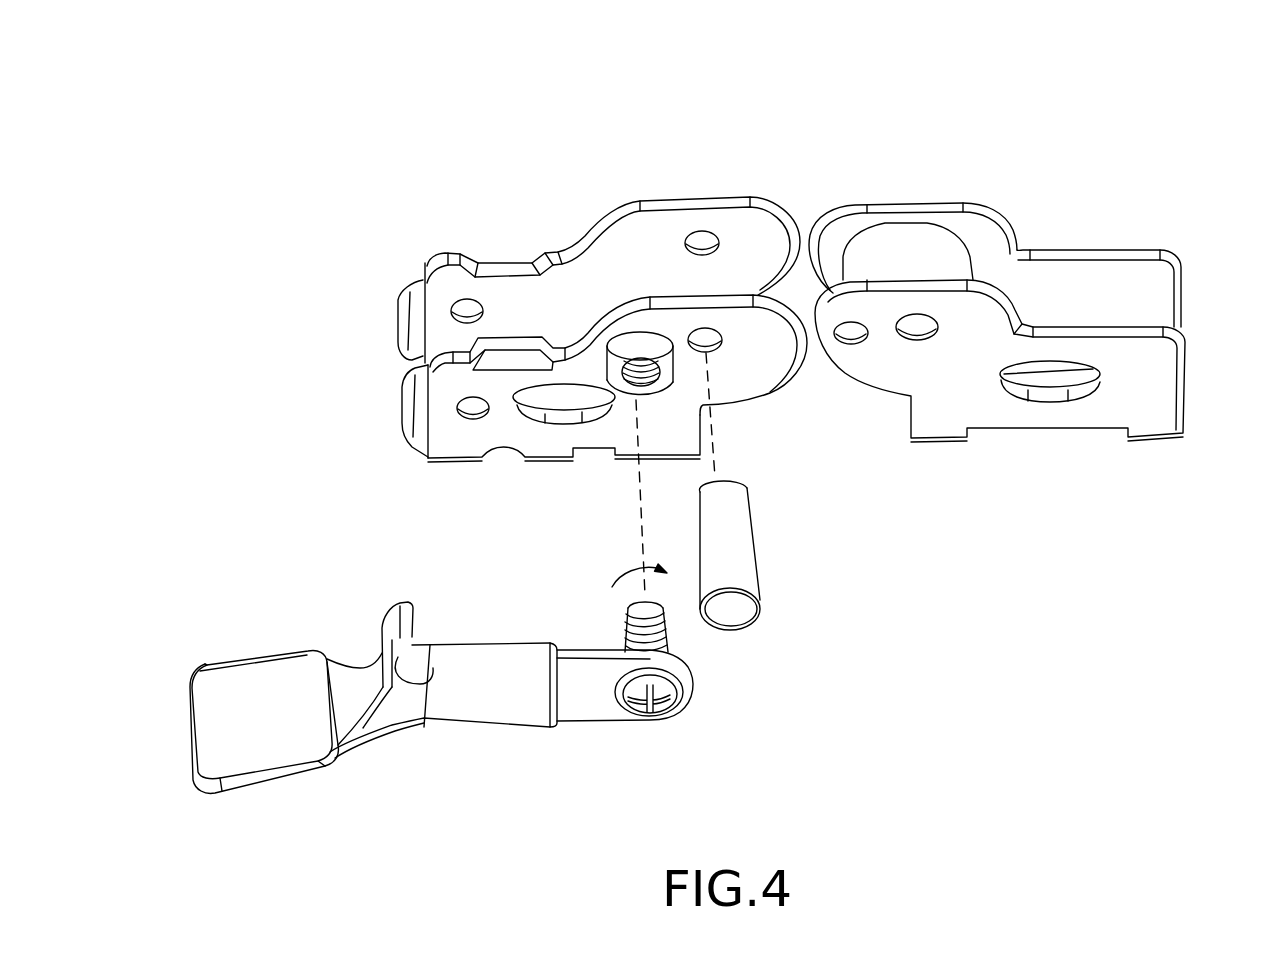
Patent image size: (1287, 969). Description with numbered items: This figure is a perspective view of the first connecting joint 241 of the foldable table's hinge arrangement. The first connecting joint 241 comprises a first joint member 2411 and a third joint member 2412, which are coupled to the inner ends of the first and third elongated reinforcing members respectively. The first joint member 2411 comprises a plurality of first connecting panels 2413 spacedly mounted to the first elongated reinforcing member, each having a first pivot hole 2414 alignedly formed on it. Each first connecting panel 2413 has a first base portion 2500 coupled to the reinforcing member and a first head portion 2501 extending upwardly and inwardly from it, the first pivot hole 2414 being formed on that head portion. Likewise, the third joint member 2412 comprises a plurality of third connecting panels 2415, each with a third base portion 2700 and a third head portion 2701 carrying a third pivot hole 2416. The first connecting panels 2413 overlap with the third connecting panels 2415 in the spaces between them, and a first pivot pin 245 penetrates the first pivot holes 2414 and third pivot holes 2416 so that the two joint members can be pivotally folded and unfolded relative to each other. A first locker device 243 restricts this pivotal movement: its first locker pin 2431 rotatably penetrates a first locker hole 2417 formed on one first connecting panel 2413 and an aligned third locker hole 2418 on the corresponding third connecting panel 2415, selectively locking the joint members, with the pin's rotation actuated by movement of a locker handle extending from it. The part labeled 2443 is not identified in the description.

The first connecting joint 241 is at (733, 132).
The first joint member 2411 is at (491, 212).
The third joint member 2412 is at (1113, 202).
The first connecting panels 2413 is at (645, 242).
The first pivot hole 2414 is at (736, 364).
The third connecting panels 2415 is at (1113, 287).
The third pivot hole 2416 is at (949, 361).
The first locker hole 2417 is at (623, 414).
The third locker hole 2418 is at (847, 369).
The first base portion 2500 is at (441, 459).
The first head portion 2501 is at (753, 318).
The third base portion 2700 is at (1180, 430).
The third head portion 2701 is at (995, 293).
The first locker device 243 is at (760, 735).
The first locker pin 2431 is at (672, 632).
The handle paddle 2443 is at (262, 700).
The first pivot pin 245 is at (735, 548).